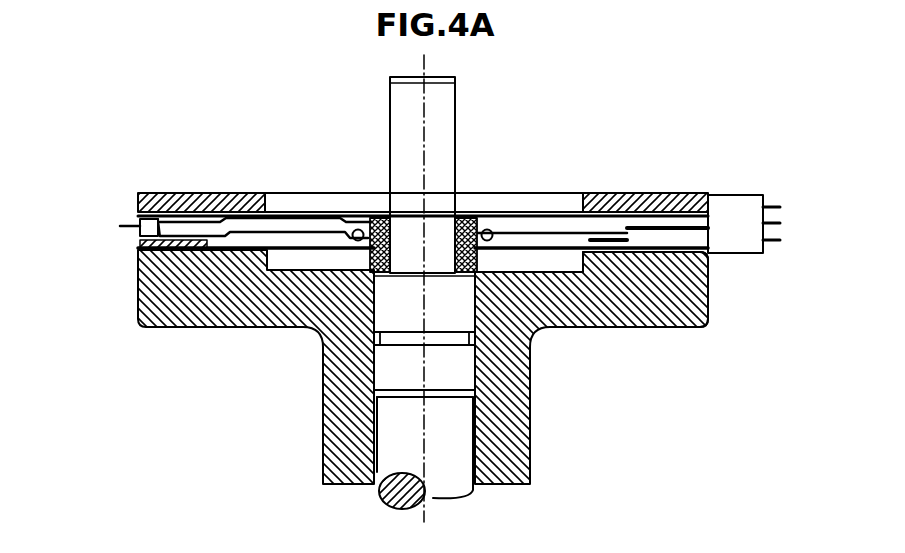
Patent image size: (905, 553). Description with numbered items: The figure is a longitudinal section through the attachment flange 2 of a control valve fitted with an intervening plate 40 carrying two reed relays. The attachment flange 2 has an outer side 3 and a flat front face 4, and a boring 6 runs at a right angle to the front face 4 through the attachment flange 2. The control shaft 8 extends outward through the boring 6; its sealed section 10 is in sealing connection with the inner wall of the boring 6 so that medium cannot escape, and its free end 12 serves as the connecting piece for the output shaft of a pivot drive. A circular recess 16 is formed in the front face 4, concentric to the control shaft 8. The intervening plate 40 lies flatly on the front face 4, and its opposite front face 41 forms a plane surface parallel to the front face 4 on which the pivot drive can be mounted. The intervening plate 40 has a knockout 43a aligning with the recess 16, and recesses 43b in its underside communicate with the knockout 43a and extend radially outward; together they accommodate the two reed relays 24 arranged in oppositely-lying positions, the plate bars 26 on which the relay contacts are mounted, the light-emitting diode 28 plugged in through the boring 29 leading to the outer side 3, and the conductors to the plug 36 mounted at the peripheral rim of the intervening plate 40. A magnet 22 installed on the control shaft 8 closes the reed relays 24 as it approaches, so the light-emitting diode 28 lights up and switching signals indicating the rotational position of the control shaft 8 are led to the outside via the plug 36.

The attachment flange 2 is at (667, 318).
The outer side 3 is at (710, 310).
The front face 4 is at (677, 257).
The boring 6 is at (374, 483).
The control shaft 8 is at (457, 493).
The sealed section 10 is at (398, 367).
The free end 12 is at (441, 121).
The recess 16 is at (560, 266).
The magnet 22 is at (376, 218).
The reed relay 24 is at (356, 228).
The plate bar 26 is at (250, 228).
The light-emitting diode 28 is at (138, 226).
The boring 29 is at (137, 240).
The plug 36 is at (752, 203).
The intervening plate 40 is at (195, 193).
The front face 41 is at (250, 212).
The knockout 43a is at (573, 206).
The recesses 43b is at (615, 215).